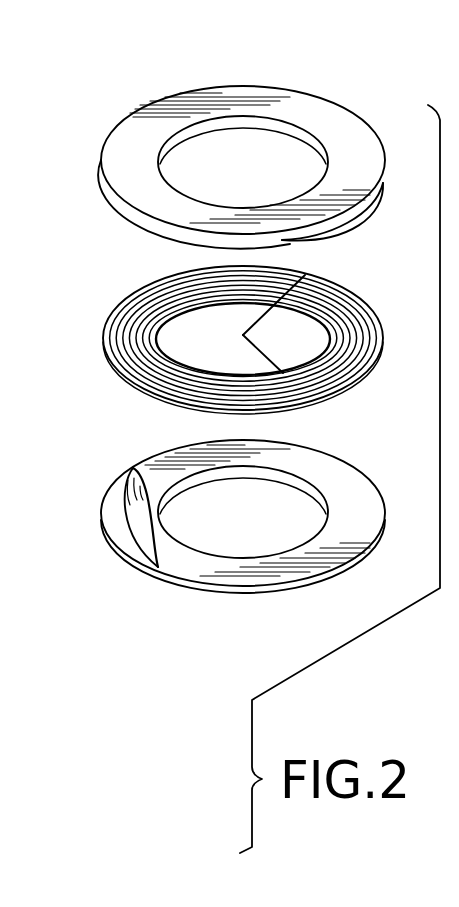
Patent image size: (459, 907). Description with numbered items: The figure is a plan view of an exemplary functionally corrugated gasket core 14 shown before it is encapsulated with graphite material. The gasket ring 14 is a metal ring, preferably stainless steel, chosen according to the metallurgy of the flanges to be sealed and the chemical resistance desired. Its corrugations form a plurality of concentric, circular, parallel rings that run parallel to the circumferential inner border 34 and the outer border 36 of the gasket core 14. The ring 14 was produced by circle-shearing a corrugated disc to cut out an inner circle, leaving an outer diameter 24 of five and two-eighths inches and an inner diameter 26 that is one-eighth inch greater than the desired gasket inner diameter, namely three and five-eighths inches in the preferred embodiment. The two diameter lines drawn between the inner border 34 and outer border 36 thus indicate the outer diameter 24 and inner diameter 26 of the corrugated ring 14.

The functionally corrugated gasket ring 14 is at (252, 340).
The outer diameter 24 is at (251, 325).
The inner diameter 26 is at (272, 363).
The circumferential inner border 34 is at (168, 350).
The outer border 36 is at (335, 390).